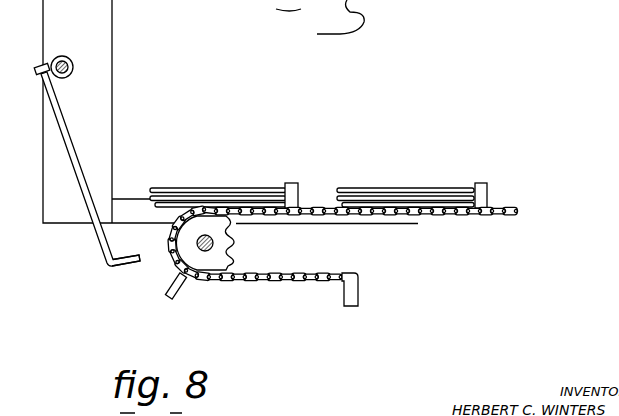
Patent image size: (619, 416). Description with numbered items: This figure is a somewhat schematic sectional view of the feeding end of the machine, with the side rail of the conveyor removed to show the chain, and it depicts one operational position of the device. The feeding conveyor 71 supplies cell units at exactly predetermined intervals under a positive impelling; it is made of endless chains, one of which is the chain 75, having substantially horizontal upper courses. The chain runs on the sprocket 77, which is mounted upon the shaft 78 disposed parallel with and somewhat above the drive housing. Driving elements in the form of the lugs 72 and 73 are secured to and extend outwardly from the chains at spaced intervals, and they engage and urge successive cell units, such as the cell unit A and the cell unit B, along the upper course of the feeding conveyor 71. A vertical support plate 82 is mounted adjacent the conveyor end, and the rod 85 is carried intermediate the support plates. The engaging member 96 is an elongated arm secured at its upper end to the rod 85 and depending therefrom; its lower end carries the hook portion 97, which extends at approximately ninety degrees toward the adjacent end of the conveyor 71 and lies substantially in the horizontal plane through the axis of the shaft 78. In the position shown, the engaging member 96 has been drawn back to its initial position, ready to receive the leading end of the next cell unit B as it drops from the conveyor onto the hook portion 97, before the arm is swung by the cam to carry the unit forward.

The feeding conveyor 71 is at (528, 210).
The lug 72 is at (296, 183).
The lug 73 is at (483, 192).
The endless chain 75 is at (298, 284).
The sprocket 77 is at (212, 266).
The shaft 78 is at (213, 243).
The support plate 82 is at (107, 51).
The rod 85 is at (73, 71).
The engaging member 96 is at (80, 178).
The hook portion 97 is at (130, 267).
The cell unit A is at (217, 185).
The cell unit B is at (372, 187).